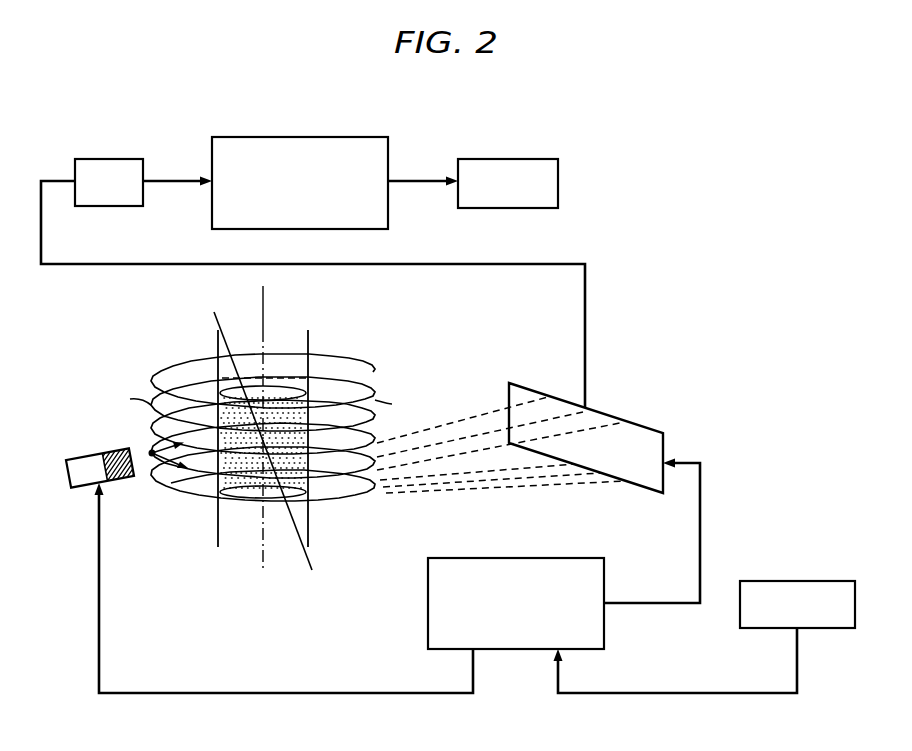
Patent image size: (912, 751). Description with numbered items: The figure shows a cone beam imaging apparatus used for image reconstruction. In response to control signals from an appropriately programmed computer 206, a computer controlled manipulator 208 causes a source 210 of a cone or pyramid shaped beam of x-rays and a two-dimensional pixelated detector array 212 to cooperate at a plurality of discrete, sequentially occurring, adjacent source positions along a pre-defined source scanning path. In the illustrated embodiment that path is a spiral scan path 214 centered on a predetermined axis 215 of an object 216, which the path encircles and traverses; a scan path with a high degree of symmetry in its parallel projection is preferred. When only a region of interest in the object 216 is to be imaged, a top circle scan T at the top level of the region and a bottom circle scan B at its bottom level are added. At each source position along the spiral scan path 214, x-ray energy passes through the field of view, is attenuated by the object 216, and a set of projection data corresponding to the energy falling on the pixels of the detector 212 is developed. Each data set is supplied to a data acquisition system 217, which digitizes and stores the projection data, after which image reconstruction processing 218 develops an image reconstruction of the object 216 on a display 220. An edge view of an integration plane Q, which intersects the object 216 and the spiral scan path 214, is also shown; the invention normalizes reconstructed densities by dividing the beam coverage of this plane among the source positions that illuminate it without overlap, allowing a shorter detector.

The computer 206 is at (830, 581).
The computer controlled manipulator 208 is at (569, 558).
The source 210 is at (86, 458).
The two-dimensional pixelated detector array 212 is at (641, 427).
The spiral scan path 214 is at (152, 410).
The axis 215 is at (263, 300).
The object 216 is at (372, 404).
The data acquisition system 217 is at (92, 158).
The image reconstruction processing 218 is at (268, 137).
The display 220 is at (510, 159).
The integration plane Q is at (213, 316).
The top circle scan T is at (343, 360).
The bottom circle scan B is at (333, 503).